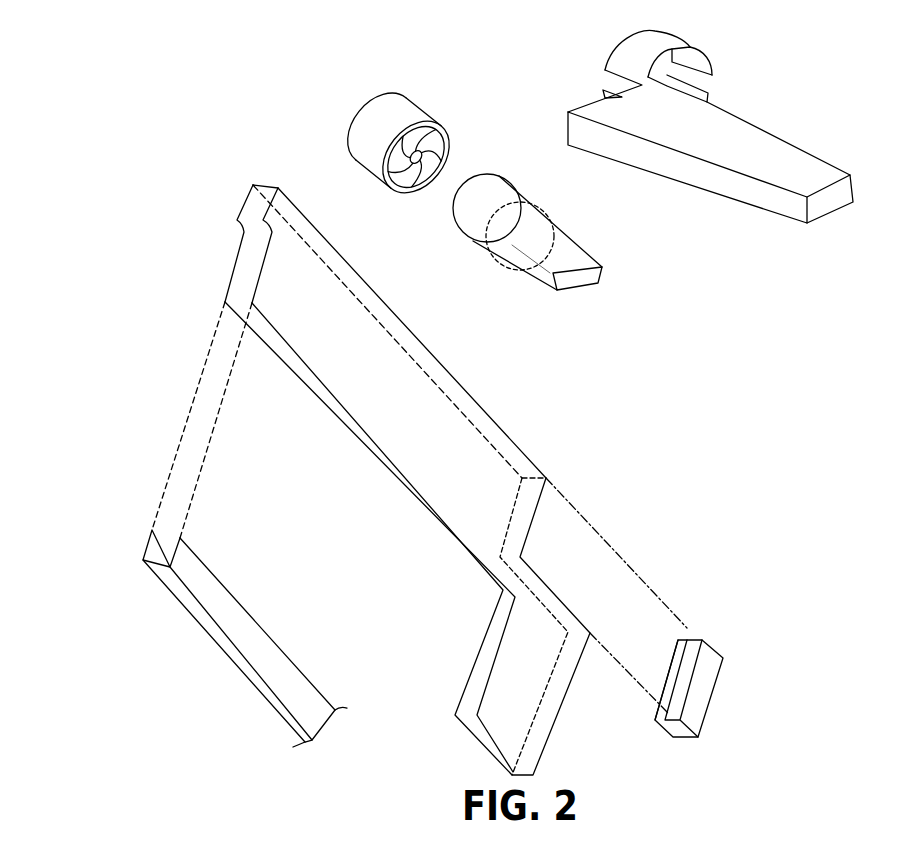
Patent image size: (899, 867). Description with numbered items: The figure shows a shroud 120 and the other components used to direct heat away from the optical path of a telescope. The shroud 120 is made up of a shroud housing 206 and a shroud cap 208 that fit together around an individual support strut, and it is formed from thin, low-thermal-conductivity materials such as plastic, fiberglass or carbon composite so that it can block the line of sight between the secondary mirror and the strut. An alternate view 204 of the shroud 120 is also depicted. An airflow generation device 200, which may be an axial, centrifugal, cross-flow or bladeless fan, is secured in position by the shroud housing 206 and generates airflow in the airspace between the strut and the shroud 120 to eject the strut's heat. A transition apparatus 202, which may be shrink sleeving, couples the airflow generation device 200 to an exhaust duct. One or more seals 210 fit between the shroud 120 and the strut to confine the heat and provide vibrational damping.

The shroud 120 is at (106, 324).
The airflow generation device 200 is at (418, 108).
The transition apparatus 202 is at (568, 228).
The alternate view of shroud 204 is at (762, 130).
The shroud housing 206 is at (486, 410).
The shroud cap 208 is at (217, 645).
The seal 210 is at (682, 632).